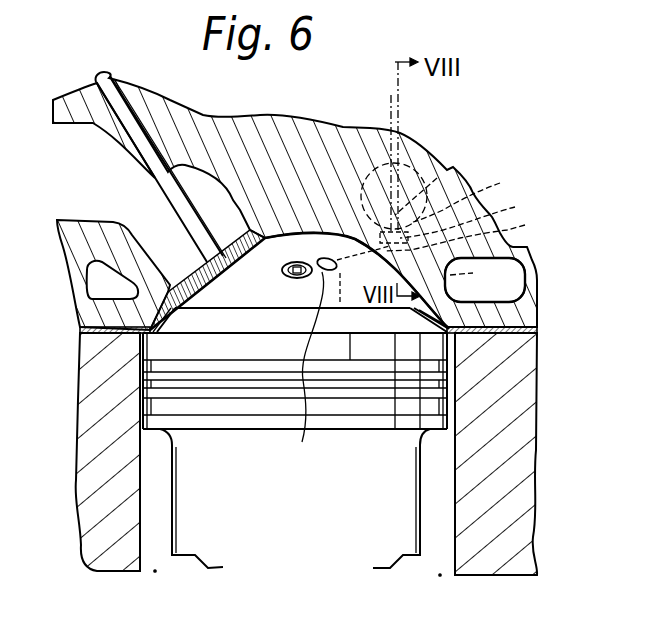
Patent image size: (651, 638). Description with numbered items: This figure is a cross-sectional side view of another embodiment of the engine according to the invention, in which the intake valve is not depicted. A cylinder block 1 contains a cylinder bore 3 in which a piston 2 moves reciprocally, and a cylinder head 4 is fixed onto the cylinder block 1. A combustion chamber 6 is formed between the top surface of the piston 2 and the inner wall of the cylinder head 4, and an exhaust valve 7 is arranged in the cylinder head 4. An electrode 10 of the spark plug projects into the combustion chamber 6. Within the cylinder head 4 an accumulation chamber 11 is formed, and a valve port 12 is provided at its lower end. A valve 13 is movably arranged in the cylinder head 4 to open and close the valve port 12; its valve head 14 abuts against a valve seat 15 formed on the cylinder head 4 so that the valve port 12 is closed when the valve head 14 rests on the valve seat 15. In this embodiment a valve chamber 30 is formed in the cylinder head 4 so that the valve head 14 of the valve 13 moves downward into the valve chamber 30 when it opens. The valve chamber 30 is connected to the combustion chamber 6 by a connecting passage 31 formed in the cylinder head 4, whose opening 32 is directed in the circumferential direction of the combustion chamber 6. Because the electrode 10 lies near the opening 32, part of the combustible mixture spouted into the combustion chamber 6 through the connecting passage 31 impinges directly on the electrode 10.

The cylinder block 1 is at (490, 548).
The piston 2 is at (372, 537).
The cylinder bore 3 is at (490, 531).
The cylinder head 4 is at (233, 150).
The combustion chamber 6 is at (242, 303).
The exhaust valve 7 is at (168, 195).
The electrode of the spark plug 10 is at (297, 262).
The accumulation chamber 11 is at (437, 178).
The valve port 12 is at (471, 196).
The valve 13 is at (400, 151).
The valve head 14 is at (470, 244).
The valve seat 15 is at (473, 215).
The valve chamber 30 is at (485, 280).
The connecting passage 31 is at (353, 278).
The opening 32 is at (306, 371).